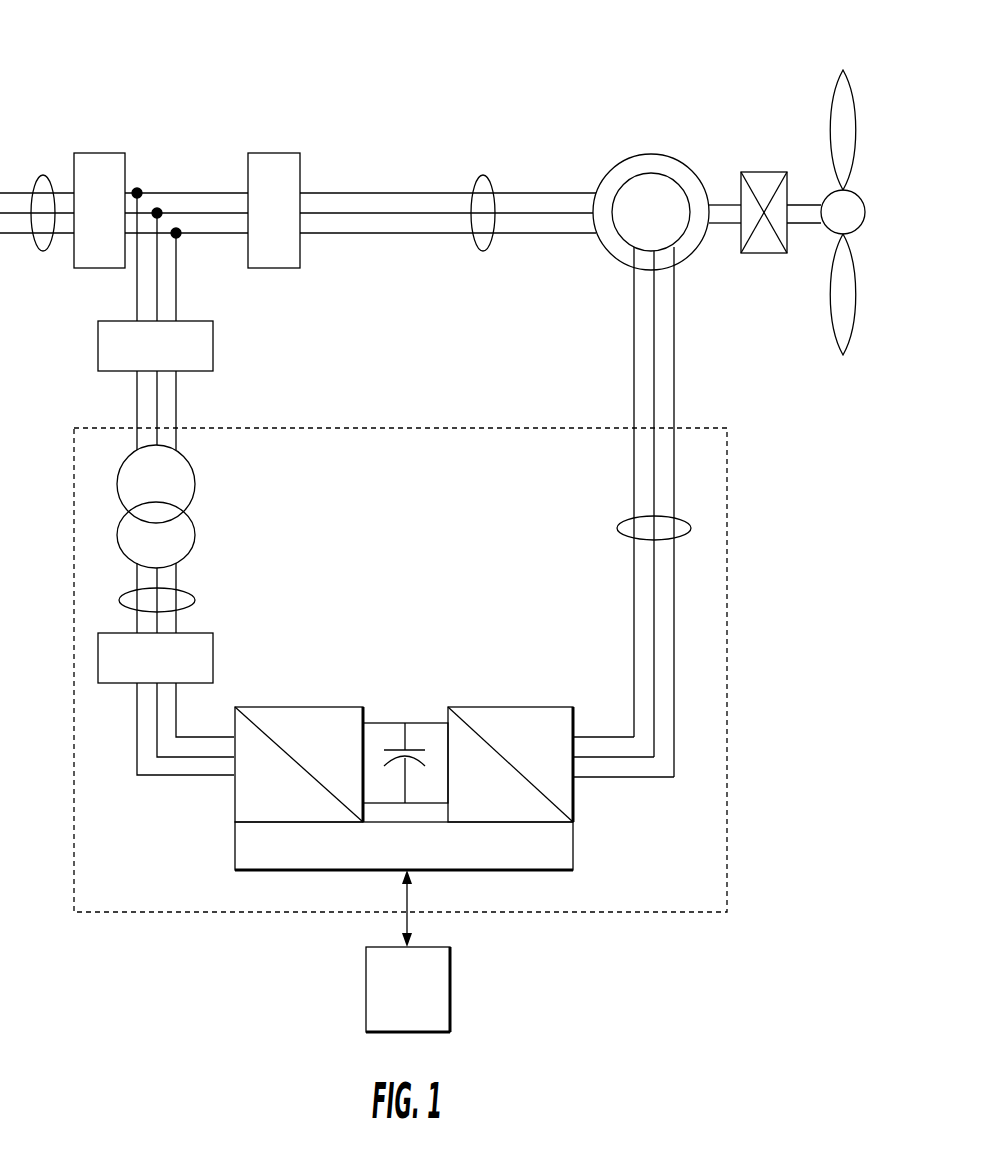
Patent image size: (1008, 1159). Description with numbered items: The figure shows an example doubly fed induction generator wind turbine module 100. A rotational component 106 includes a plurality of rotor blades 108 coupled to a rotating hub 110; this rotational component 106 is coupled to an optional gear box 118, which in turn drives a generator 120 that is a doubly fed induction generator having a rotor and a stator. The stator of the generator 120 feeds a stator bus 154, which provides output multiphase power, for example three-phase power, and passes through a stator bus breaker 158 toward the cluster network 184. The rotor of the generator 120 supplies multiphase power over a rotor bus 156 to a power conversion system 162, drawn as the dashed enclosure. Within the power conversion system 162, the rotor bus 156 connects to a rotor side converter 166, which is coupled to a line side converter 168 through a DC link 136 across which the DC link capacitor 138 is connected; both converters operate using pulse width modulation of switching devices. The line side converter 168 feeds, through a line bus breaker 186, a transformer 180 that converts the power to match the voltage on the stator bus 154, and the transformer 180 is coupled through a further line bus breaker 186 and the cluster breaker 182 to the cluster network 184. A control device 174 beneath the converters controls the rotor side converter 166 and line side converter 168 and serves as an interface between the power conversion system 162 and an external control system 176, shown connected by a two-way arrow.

The DFIG module 100 is at (714, 48).
The rotational component 106 is at (872, 196).
The rotor blades 108 is at (854, 142).
The rotating hub 110 is at (865, 207).
The gear box 118 is at (772, 153).
The generator 120 is at (663, 152).
The DC link 136 is at (382, 722).
The DC link capacitor 138 is at (418, 749).
The stator bus 154 is at (487, 178).
The rotor bus 156 is at (122, 608).
The stator bus breaker 158 is at (273, 153).
The power conversion system 162 is at (727, 710).
The rotor side converter 166 is at (483, 705).
The line side converter 168 is at (302, 703).
The control device 174 is at (477, 871).
The control system 176 is at (450, 992).
The transformer 180 is at (195, 492).
The cluster breaker 182 is at (92, 153).
The cluster network 184 is at (44, 176).
The line bus breaker 186 is at (213, 340).